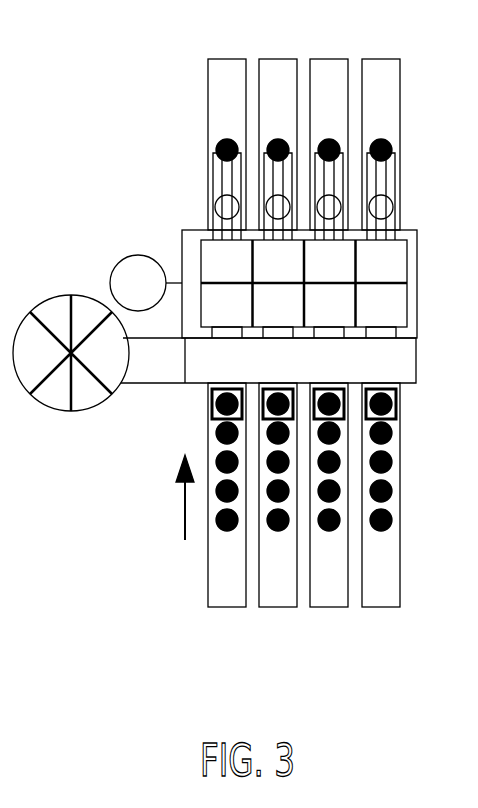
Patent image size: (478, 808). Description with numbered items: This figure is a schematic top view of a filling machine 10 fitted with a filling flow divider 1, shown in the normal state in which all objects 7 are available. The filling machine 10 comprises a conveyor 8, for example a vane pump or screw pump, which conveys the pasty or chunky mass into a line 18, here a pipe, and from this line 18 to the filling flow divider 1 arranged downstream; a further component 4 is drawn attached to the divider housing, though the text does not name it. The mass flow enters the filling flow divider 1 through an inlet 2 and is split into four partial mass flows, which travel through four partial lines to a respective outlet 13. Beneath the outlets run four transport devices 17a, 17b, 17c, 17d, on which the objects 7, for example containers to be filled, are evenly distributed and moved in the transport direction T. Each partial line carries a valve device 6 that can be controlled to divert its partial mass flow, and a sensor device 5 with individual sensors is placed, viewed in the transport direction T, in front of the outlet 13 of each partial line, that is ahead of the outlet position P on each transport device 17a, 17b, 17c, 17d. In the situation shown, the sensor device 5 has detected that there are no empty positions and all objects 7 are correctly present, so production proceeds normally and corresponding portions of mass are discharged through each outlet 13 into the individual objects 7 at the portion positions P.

The filling flow divider 1 is at (411, 356).
The inlet 2 is at (182, 381).
The supply reservoir 4 is at (136, 255).
The sensor device 5 is at (399, 412).
The valve device 6 is at (213, 207).
The objects 7 is at (270, 140).
The conveyor 8 is at (87, 399).
The filling machine 10 is at (81, 282).
The outlet 13 is at (387, 141).
The transport device 17a is at (231, 596).
The transport device 17b is at (282, 596).
The transport device 17c is at (333, 596).
The transport device 17d is at (385, 596).
The line 18 is at (143, 383).
The outlet position P is at (213, 150).
The transport direction T is at (185, 502).